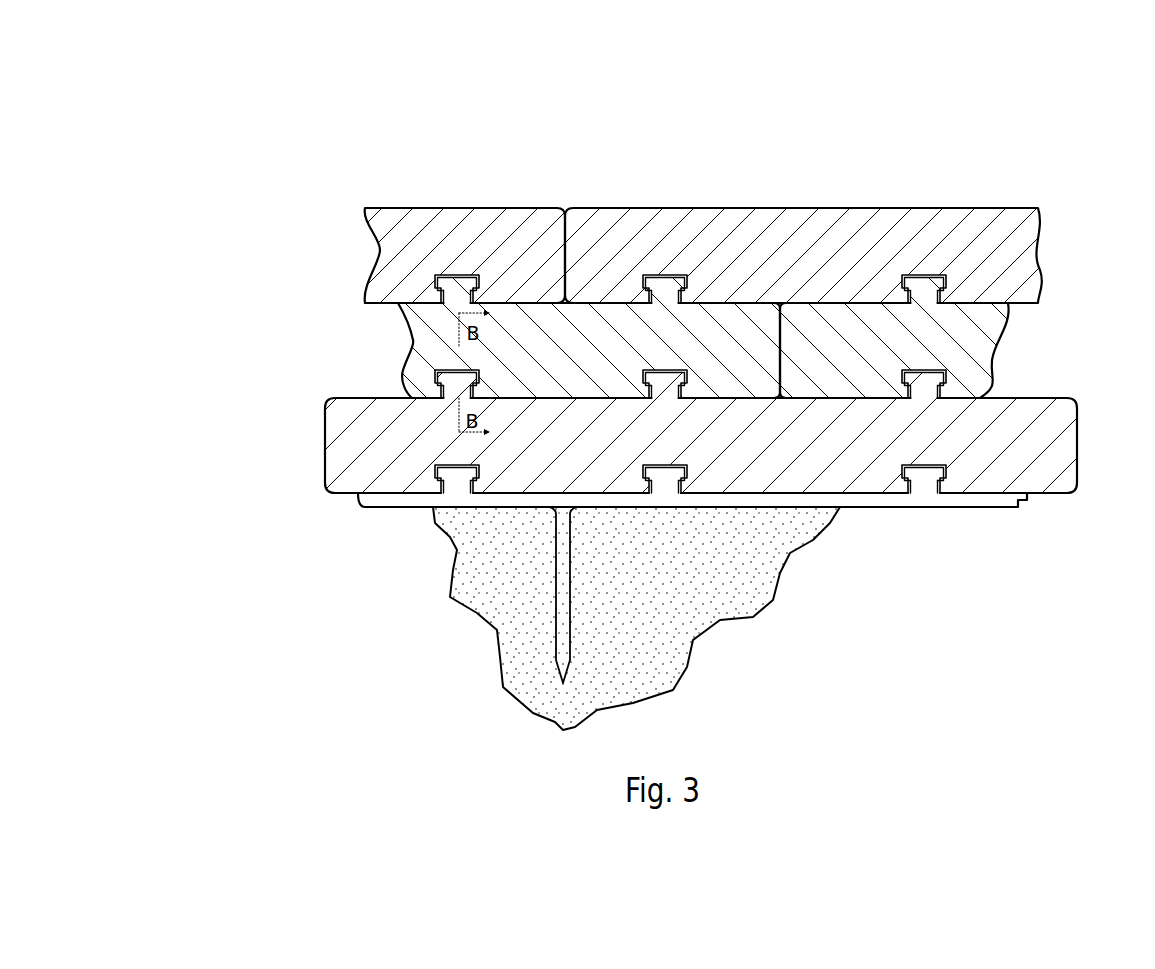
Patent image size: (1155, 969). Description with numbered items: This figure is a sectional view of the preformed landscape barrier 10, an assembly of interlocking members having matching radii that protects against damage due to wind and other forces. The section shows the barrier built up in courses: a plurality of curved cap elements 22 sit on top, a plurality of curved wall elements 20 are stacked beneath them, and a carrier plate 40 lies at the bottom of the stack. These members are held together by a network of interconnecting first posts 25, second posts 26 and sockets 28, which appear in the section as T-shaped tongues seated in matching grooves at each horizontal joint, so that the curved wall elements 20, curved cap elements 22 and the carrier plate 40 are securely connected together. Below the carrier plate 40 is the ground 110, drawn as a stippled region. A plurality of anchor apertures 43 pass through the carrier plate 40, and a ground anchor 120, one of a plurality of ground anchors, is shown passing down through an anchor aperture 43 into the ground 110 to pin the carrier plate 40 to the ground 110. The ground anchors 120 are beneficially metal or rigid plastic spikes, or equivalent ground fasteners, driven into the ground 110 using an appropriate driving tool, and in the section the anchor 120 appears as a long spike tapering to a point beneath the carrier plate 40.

The landscape barrier 10 is at (230, 162).
The curved wall elements 20 is at (343, 487).
The curved cap elements 22 is at (493, 238).
The first posts 25 is at (433, 475).
The second posts 26 is at (437, 282).
The sockets 28 is at (445, 277).
The carrier plate 40 is at (917, 507).
The anchor apertures 43 is at (547, 500).
The ground 110 is at (700, 590).
The ground anchors 120 is at (560, 577).